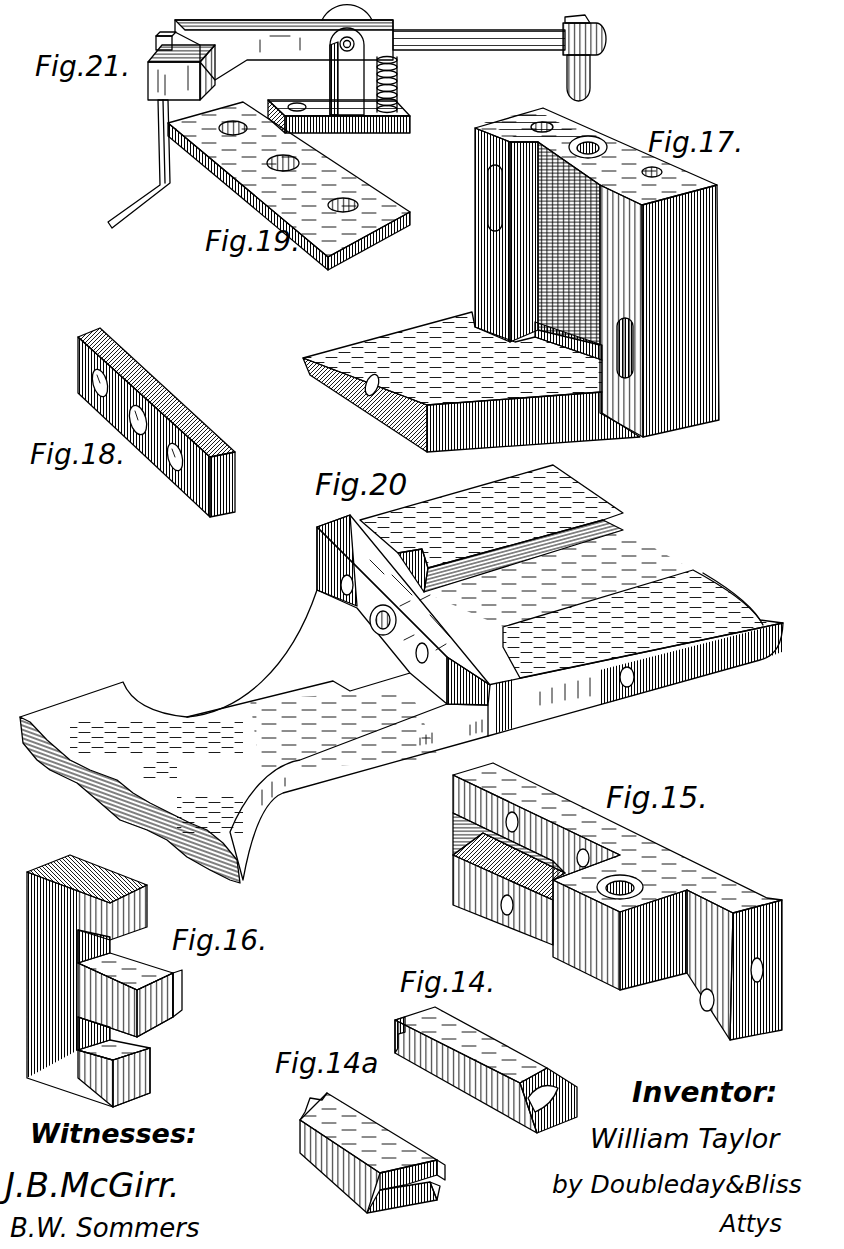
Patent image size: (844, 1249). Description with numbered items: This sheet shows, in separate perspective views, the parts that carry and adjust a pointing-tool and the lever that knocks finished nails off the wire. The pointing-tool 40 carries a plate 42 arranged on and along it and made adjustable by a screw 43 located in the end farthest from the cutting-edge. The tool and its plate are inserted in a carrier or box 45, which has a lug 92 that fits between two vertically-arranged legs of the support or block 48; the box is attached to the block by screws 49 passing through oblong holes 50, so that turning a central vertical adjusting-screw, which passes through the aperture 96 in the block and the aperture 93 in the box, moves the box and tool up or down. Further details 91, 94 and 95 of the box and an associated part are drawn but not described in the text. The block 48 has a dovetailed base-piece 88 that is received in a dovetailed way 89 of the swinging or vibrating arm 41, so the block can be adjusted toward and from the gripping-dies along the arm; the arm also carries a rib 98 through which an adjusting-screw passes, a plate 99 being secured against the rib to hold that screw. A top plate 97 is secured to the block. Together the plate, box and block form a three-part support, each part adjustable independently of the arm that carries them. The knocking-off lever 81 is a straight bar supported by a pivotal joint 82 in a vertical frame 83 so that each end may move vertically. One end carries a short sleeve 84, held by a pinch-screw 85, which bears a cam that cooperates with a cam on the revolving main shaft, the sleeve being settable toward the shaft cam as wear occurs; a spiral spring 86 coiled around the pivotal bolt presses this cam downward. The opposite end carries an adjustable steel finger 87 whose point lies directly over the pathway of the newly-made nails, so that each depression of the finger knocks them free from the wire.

In FIG. 21, the knocking-off lever 81 is at (479, 25).
In FIG. 21, the pivotal joint 82 is at (338, 23).
In FIG. 21, the vertical frame 83 is at (339, 80).
In FIG. 21, the short sleeve 84 is at (598, 48).
In FIG. 21, the pinch-screw 85 is at (572, 24).
In FIG. 21, the spiral spring 86 is at (397, 82).
In FIG. 21, the adjustable steel finger 87 is at (161, 130).
In FIG. 19, the plate 97 is at (340, 176).
In FIG. 17, the support or block 48 is at (581, 267).
In FIG. 17, the screws 49 is at (634, 347).
In FIG. 17, the oblong holes 50 is at (486, 207).
In FIG. 17, the dovetailed base-piece 88 is at (471, 382).
In FIG. 17, the aperture 96 is at (571, 138).
In FIG. 18, the plate 99 is at (190, 422).
In FIG. 20, the vibrating arm 41 is at (401, 736).
In FIG. 20, the dovetailed way 89 is at (571, 571).
In FIG. 20, the rib 98 is at (316, 577).
In FIG. 15, the carrier or box 45 is at (609, 901).
In FIG. 15, the slot 91 is at (483, 834).
In FIG. 15, the lug 92 is at (586, 935).
In FIG. 15, the aperture 93 is at (612, 879).
In FIG. 15, the hole / arm 94 is at (514, 818).
In FIG. 16, the hole / arm 94 is at (110, 975).
In FIG. 16, the arm 95 is at (110, 944).
In FIG. 14, the pointing-tool 40 is at (499, 1070).
In FIG. 14A, the pointing-tool 40 is at (372, 1150).
In FIG. 14, the plate 42 is at (494, 1100).
In FIG. 14A, the plate 42 is at (363, 1111).
In FIG. 14, the screw 43 is at (547, 1083).